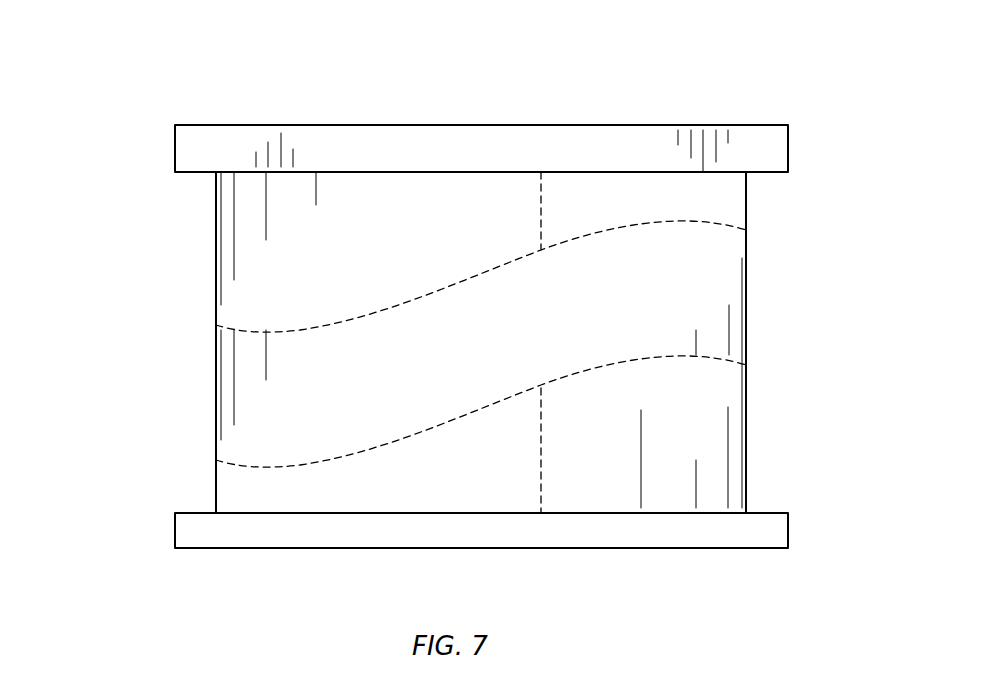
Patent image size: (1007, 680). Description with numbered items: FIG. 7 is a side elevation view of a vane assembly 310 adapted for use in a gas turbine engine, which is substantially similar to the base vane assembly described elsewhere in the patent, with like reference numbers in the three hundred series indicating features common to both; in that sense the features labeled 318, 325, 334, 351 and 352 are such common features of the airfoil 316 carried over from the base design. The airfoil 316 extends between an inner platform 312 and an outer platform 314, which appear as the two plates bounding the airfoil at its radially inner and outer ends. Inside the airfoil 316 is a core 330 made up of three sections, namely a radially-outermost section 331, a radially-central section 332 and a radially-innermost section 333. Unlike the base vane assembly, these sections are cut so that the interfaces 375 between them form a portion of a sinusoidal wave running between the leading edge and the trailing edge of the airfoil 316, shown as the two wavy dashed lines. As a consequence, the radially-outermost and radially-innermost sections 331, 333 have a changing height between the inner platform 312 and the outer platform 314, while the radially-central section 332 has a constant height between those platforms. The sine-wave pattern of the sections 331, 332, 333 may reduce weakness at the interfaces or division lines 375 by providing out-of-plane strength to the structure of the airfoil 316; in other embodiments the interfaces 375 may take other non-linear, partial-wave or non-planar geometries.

The vane assembly 310 is at (135, 100).
The inner platform 312 is at (763, 540).
The outer platform 314 is at (756, 160).
The airfoil 316 is at (120, 292).
The wall portion 318 is at (215, 350).
The intermediate boundary 325 is at (540, 193).
The core 330 is at (277, 270).
The radially-outermost section 331 is at (660, 195).
The radially-central section 332 is at (703, 300).
The radially-innermost section 333 is at (700, 447).
The upper wall portion 334 is at (222, 205).
The lower wall portion 351 is at (216, 495).
The right wall portion 352 is at (747, 388).
The interfaces 375 is at (247, 335).